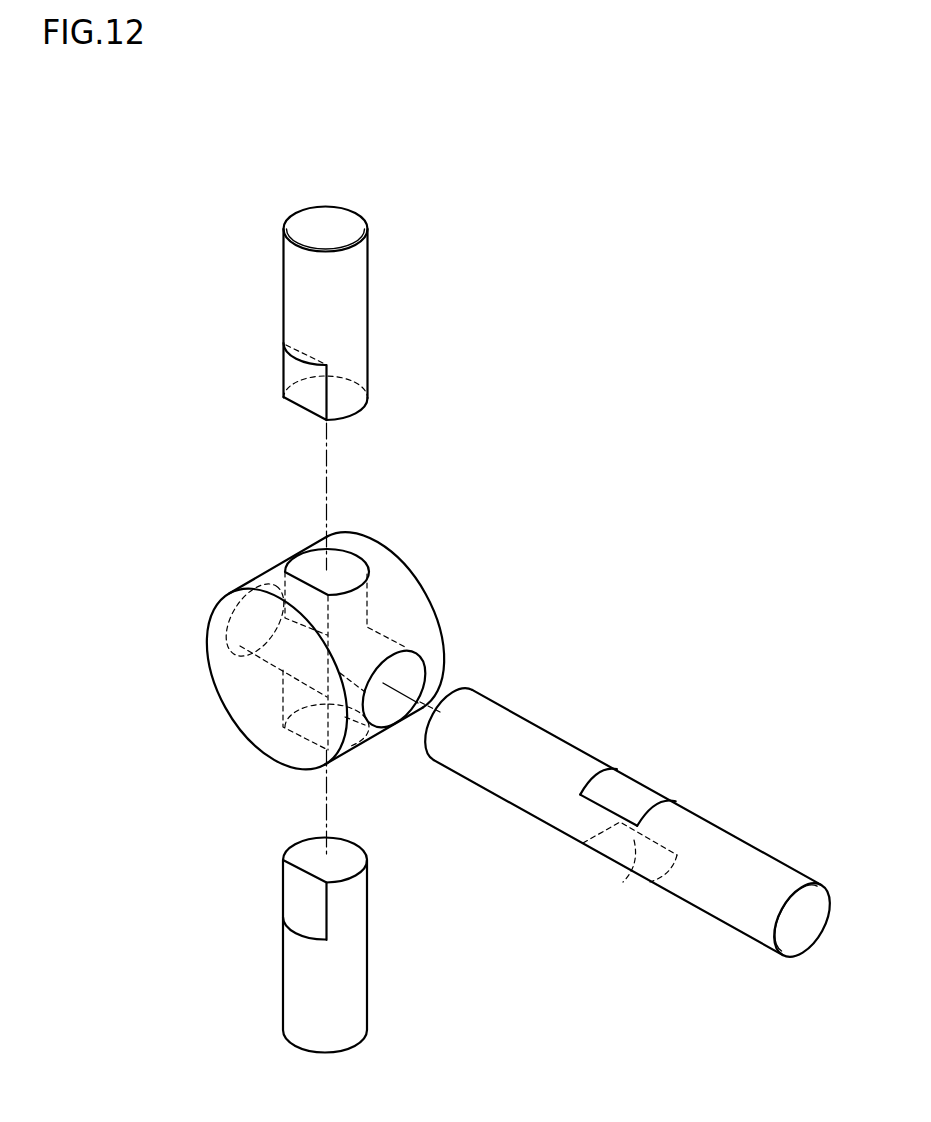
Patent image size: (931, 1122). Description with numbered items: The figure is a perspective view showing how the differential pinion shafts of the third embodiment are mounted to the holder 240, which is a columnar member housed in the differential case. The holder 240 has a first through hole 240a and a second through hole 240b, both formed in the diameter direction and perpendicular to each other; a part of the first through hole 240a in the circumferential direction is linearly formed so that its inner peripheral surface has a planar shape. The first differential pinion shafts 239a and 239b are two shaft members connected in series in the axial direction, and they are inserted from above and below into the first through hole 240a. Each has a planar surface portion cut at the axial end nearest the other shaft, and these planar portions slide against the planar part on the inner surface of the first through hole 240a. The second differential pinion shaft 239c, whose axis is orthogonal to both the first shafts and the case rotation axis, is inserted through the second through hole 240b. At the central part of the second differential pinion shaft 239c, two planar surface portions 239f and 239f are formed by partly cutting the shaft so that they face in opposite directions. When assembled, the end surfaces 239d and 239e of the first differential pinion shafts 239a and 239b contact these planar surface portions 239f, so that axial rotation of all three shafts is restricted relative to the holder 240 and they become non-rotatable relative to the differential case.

The first differential pinion shaft 239a is at (348, 294).
The first differential pinion shaft 239b is at (348, 979).
The second differential pinion shaft 239c is at (750, 917).
The end surface 239d is at (363, 415).
The end surface 239e is at (302, 855).
The planar surface portion 239f is at (625, 792).
The holder 240 is at (412, 622).
The first through hole 240a is at (337, 562).
The second through hole 240b is at (397, 700).